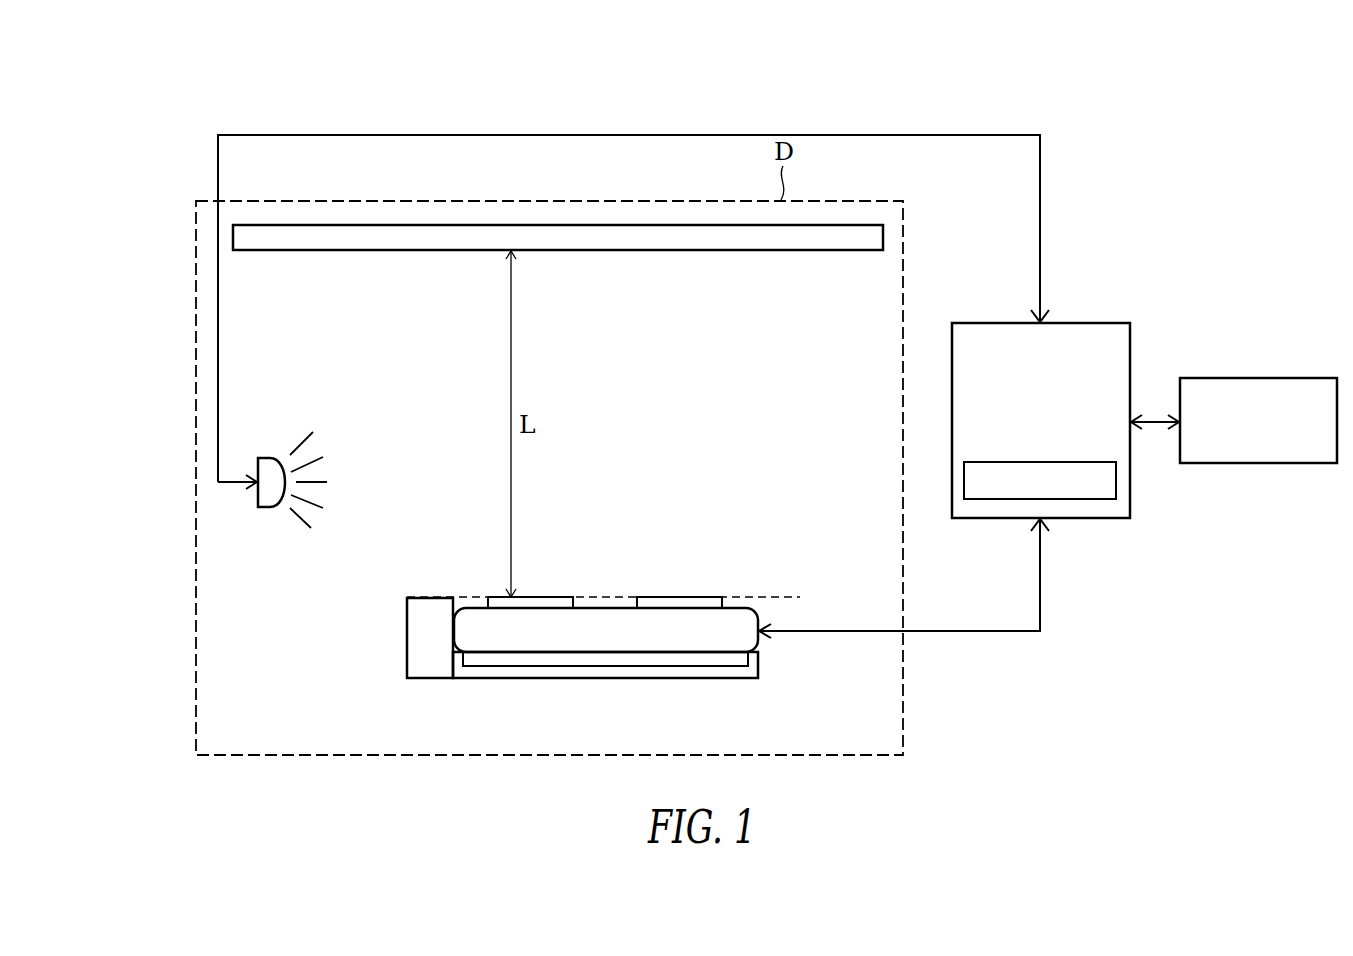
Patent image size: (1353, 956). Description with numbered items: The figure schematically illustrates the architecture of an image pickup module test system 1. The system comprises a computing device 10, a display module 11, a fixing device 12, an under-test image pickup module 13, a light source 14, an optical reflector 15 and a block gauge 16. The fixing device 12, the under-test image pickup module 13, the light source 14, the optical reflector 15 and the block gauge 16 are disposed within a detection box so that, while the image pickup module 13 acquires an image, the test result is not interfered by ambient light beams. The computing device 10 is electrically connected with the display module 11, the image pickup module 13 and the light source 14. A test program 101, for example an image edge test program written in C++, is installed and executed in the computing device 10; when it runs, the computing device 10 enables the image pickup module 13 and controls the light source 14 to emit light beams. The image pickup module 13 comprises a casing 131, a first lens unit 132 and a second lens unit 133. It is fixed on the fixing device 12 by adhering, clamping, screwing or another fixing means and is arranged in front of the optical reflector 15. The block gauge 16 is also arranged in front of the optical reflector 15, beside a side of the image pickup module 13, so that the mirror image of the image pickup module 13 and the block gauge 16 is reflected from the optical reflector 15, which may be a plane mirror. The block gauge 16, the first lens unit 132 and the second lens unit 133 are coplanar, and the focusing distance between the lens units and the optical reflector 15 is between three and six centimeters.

The image pickup module test system 1 is at (172, 87).
The computing device 10 is at (1085, 321).
The test program 101 is at (1067, 461).
The display module 11 is at (1255, 376).
The fixing device 12 is at (610, 679).
The under-test image pickup module 13 is at (562, 563).
The casing 131 is at (741, 626).
The first lens unit 132 is at (543, 597).
The second lens unit 133 is at (675, 597).
The light source 14 is at (262, 455).
The optical reflector 15 is at (624, 251).
The block gauge 16 is at (425, 630).